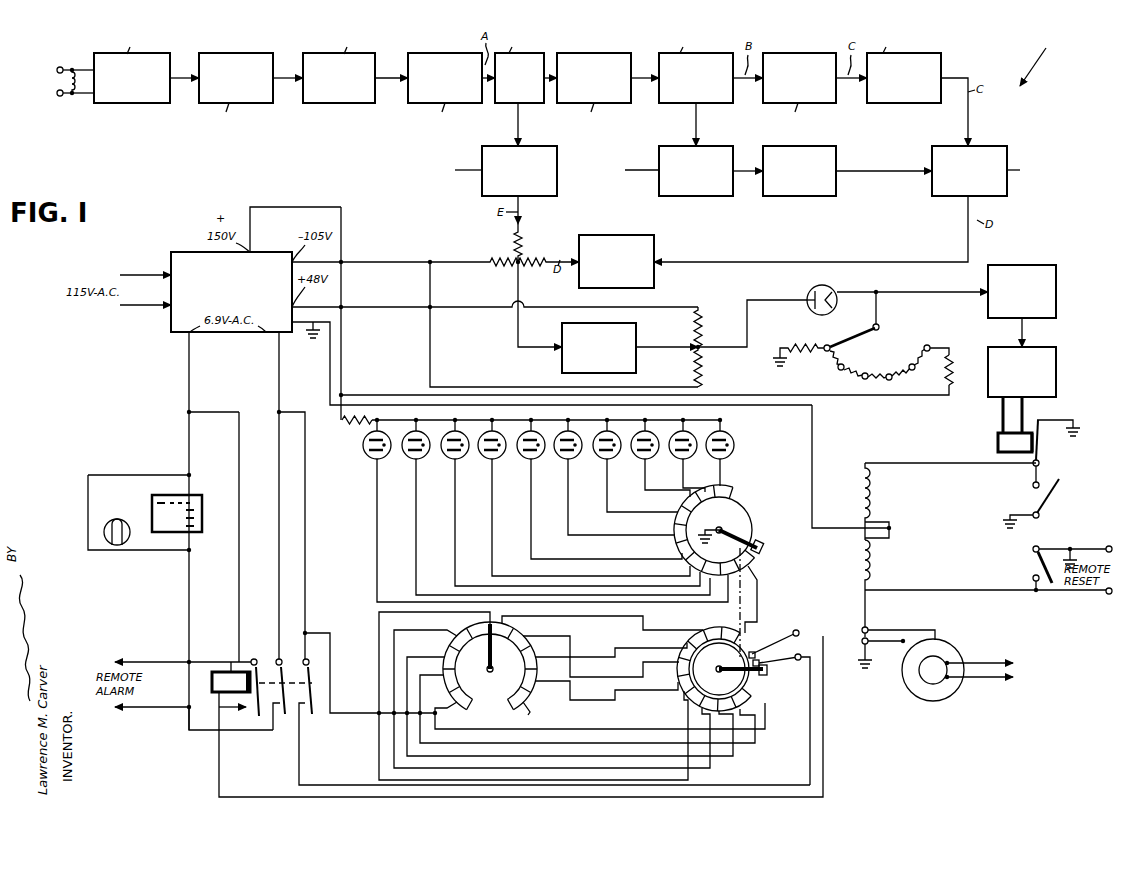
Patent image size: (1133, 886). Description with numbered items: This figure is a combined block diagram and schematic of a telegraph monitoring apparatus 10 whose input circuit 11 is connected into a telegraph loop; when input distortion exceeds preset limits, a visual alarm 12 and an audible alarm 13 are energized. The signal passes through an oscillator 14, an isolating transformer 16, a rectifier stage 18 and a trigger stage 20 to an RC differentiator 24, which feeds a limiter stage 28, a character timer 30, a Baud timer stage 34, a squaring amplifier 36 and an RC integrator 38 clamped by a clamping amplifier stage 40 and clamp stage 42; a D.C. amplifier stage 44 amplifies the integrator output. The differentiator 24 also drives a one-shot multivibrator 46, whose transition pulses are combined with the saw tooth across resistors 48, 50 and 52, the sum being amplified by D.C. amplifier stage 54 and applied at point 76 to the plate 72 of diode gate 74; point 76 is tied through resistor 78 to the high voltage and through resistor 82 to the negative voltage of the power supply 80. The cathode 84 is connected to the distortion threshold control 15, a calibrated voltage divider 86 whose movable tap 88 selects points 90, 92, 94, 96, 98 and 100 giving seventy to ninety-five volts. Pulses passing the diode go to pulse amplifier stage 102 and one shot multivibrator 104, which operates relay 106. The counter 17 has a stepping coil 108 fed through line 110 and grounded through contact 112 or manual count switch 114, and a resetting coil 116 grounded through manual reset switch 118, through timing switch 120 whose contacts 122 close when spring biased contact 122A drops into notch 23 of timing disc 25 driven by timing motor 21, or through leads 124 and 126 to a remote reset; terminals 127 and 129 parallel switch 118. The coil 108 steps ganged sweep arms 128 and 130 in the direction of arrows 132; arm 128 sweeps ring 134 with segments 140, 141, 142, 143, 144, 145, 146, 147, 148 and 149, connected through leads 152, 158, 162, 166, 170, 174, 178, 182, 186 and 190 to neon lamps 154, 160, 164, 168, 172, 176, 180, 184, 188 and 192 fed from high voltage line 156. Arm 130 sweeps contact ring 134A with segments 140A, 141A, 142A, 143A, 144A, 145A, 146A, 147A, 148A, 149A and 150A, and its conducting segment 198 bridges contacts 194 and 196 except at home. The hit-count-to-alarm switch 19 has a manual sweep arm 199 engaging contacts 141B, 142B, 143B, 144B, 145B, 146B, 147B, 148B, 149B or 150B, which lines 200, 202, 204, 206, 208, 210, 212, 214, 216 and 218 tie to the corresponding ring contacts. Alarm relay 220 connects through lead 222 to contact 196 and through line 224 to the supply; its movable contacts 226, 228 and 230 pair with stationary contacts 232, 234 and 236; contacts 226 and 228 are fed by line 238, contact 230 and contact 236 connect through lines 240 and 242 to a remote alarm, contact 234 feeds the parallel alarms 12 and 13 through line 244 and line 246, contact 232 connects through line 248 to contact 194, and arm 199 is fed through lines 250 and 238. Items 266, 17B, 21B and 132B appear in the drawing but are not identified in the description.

The telegraph monitoring apparatus 10 is at (1040, 59).
The input circuit 11 is at (58, 66).
The input terminal coil 266 is at (56, 90).
The visual alarm 12 is at (109, 520).
The audible alarm 13 is at (152, 498).
The oscillator 14 is at (137, 85).
The distortion threshold control 15 is at (918, 343).
The isolating transformer 16 is at (242, 85).
The counter 17 is at (746, 498).
The rotary switch 17B is at (728, 693).
The rectifier stage 18 is at (345, 85).
The hit-count-to-alarm switch 19 is at (489, 664).
The trigger stage 20 is at (451, 85).
The timing motor 21 is at (990, 674).
The wire 21B is at (767, 608).
The notch 23 is at (950, 652).
The RC differentiator 24 is at (526, 85).
The timing disc 25 is at (942, 698).
The limiter stage 28 is at (600, 85).
The character timer 30 is at (702, 85).
The Baud timer stage 34 is at (805, 85).
The squaring amplifier stage 36 is at (910, 85).
The RC integrator 38 is at (975, 180).
The clamping amplifier stage 40 is at (702, 180).
The clamp stage 42 is at (806, 188).
The D.C. amplifier stage 44 is at (631, 235).
The one-shot multivibrator 46 is at (524, 180).
The resistor 48 is at (514, 243).
The resistor 50 is at (503, 266).
The resistor 52 is at (533, 258).
The D.C. amplifier stage 54 is at (562, 340).
The plate 72 is at (807, 296).
The diode gate 74 is at (807, 304).
The point 76 is at (702, 345).
The resistor 78 is at (702, 318).
The power supply 80 is at (196, 252).
The resistor 82 is at (702, 362).
The cathode 84 is at (845, 293).
The calibrated voltage divider 86 is at (836, 371).
The movable tap 88 is at (863, 332).
The point 90 is at (827, 345).
The point 92 is at (844, 359).
The point 94 is at (858, 380).
The point 96 is at (881, 383).
The point 98 is at (905, 361).
The point 100 is at (928, 344).
The pulse amplifier stage 102 is at (1056, 278).
The one shot multivibrator 104 is at (1056, 373).
The relay 106 is at (998, 441).
The stepping coil 108 is at (871, 488).
The line 110 is at (812, 462).
The contact 112 is at (1038, 420).
The manual count switch 114 is at (1054, 485).
The resetting coil 116 is at (871, 568).
The manual reset switch 118 is at (1034, 557).
The timing switch 120 is at (897, 625).
The contacts 122 is at (903, 645).
The spring biased contact 122A is at (935, 630).
The lead 124 is at (1038, 595).
The lead 126 is at (1078, 543).
The terminal 127 is at (1108, 545).
The sweep arm 128 is at (748, 533).
The terminal 129 is at (1109, 595).
The sweep arm 130 is at (718, 676).
The arrows 132 is at (729, 519).
The shaft 132B is at (704, 669).
The ring 134 is at (762, 548).
The contact ring 134A is at (737, 620).
The segment 140 is at (763, 550).
The contact segment 140A is at (768, 671).
The contact segment 141 is at (751, 565).
The contact 141A is at (752, 690).
The contact 141B is at (455, 701).
The contact segment 142 is at (729, 566).
The contact 142A is at (748, 708).
The contact 142B is at (470, 669).
The contact segment 143 is at (712, 578).
The contact 143A is at (742, 735).
The contact 143B is at (446, 648).
The contact segment 144 is at (690, 566).
The contact 144A is at (696, 710).
The contact 144B is at (458, 633).
The contact segment 145 is at (683, 556).
The contact 145A is at (690, 698).
The contact 145B is at (495, 624).
The contact segment 146 is at (680, 541).
The contact 146A is at (682, 684).
The contact 146B is at (516, 632).
The contact segment 147 is at (686, 522).
The contact 147A is at (683, 664).
The contact 147B is at (528, 648).
The contact segment 148 is at (686, 511).
The contact 148A is at (690, 646).
The contact 148B is at (547, 670).
The contact segment 149 is at (697, 497).
The contact 149A is at (700, 634).
The contact 149B is at (532, 690).
The contact segment 150A is at (727, 625).
The contact 150B is at (520, 712).
The lead 152 is at (377, 551).
The neon lamp indicator 154 is at (366, 456).
The high voltage line 156 is at (341, 240).
The line 158 is at (416, 556).
The neon lamp indicator 160 is at (408, 458).
The lead 162 is at (455, 537).
The lamp 164 is at (446, 458).
The lead 166 is at (492, 548).
The lamp 168 is at (484, 458).
The line 170 is at (531, 526).
The lamp 172 is at (523, 458).
The lead 174 is at (568, 518).
The lamp 176 is at (561, 458).
The line 178 is at (607, 507).
The lamp 180 is at (600, 458).
The line 182 is at (645, 484).
The lamp 184 is at (635, 458).
The line 186 is at (683, 466).
The lamp 188 is at (690, 438).
The line 190 is at (721, 465).
The lamp 192 is at (731, 438).
The contact 194 is at (777, 657).
The contact 196 is at (758, 658).
The conducting segment 198 is at (754, 648).
The sweep arm 199 is at (493, 667).
The line 200 is at (580, 731).
The line 202 is at (580, 744).
The line 204 is at (580, 757).
The line 206 is at (580, 770).
The line 208 is at (580, 782).
The line 210 is at (610, 690).
The line 212 is at (576, 642).
The line 214 is at (630, 660).
The line 216 is at (627, 626).
The line 218 is at (676, 625).
The alarm relay 220 is at (222, 672).
The lead 222 is at (219, 797).
The line 224 is at (239, 596).
The movable contact 226 is at (308, 659).
The movable contact 228 is at (281, 659).
The movable contact 230 is at (256, 659).
The stationary contact 232 is at (311, 717).
The stationary contact 234 is at (276, 734).
The stationary contact 236 is at (245, 710).
The line 238 is at (279, 388).
The line 240 is at (163, 662).
The line 242 is at (163, 708).
The line 244 is at (186, 731).
The line 246 is at (189, 388).
The line 248 is at (286, 778).
The line 250 is at (352, 713).